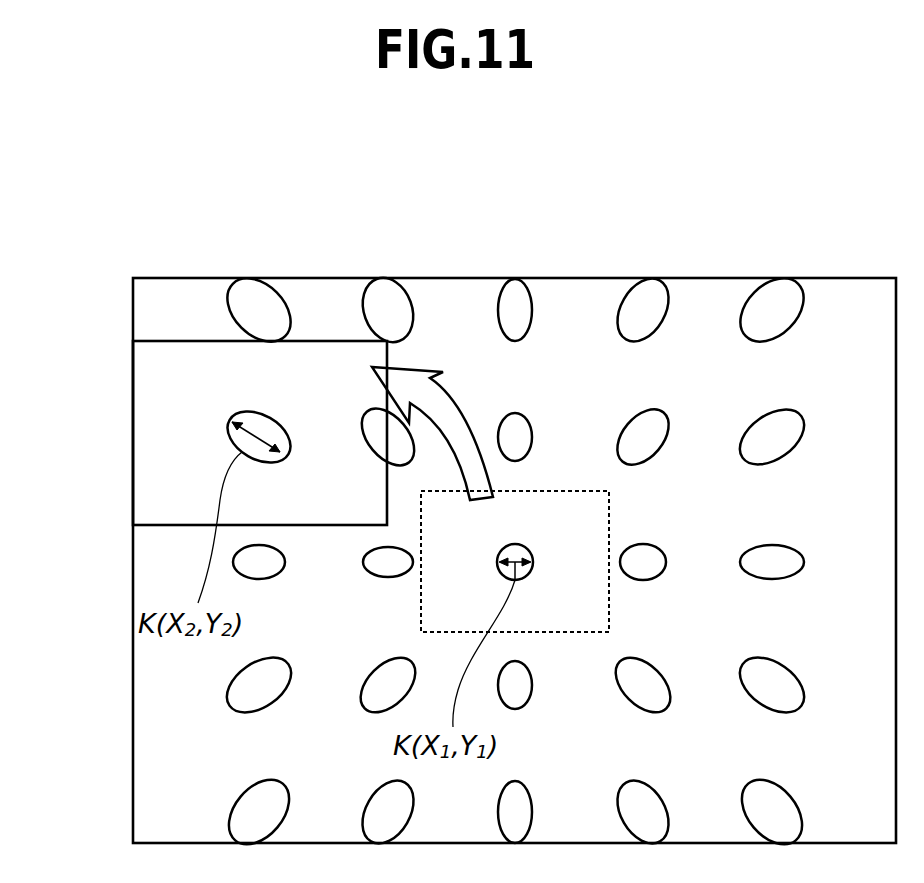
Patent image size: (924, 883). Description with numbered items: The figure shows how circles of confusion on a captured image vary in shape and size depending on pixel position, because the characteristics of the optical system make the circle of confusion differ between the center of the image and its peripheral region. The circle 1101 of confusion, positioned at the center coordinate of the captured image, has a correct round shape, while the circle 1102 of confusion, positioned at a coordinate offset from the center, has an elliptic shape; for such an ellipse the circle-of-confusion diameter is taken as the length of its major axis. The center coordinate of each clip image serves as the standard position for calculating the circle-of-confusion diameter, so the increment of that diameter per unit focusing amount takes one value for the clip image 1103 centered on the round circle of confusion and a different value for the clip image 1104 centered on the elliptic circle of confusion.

The circle of confusion 1101 is at (519, 545).
The circle of confusion 1102 is at (236, 447).
The clip image 1103 is at (609, 620).
The clip image 1104 is at (133, 417).